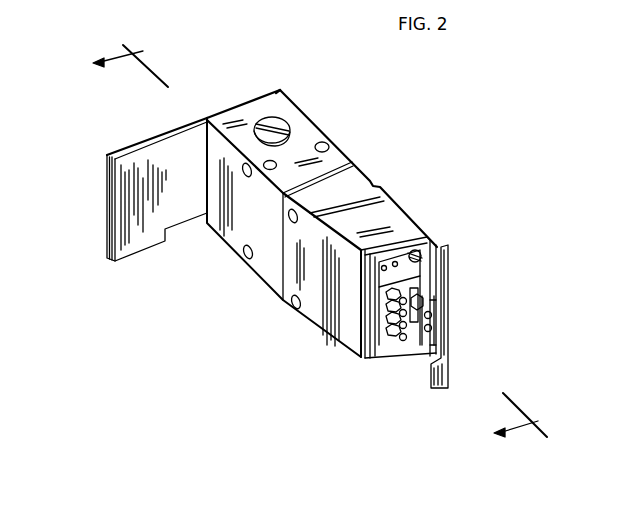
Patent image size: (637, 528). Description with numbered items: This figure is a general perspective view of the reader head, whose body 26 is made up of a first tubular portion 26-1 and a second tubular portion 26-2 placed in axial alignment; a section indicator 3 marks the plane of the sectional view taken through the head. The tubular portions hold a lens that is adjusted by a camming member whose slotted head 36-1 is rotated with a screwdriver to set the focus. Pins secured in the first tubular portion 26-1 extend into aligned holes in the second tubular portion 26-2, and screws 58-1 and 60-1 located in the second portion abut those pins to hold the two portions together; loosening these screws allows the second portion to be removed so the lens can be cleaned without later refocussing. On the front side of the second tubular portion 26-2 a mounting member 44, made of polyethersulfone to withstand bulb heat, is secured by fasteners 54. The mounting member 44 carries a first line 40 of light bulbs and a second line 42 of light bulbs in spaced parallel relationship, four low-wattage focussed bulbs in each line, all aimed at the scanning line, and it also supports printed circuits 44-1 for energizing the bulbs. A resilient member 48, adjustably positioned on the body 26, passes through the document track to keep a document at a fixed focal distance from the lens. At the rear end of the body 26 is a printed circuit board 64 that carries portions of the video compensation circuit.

The section line of FIG. 3 is at (310, 247).
The body 26 is at (360, 150).
The first tubular portion 26-1 is at (308, 135).
The second tubular portion 26-2 is at (405, 207).
The slotted head 36-1 is at (279, 117).
The printed circuit board 64 is at (128, 175).
The screw 58-1 is at (290, 222).
The screw 60-1 is at (291, 306).
The mounting member 44 is at (404, 246).
The fasteners 54 is at (421, 252).
The printed circuits 44-1 is at (417, 302).
The resilient member 48 is at (458, 337).
The second line of light bulbs 42 is at (389, 346).
The first line of light bulbs 40 is at (427, 338).